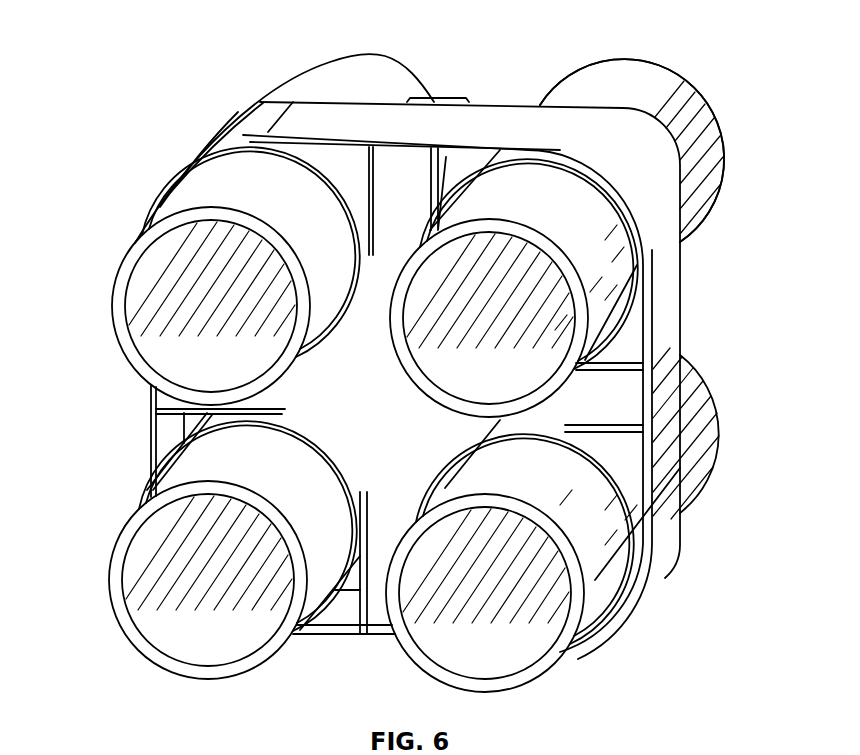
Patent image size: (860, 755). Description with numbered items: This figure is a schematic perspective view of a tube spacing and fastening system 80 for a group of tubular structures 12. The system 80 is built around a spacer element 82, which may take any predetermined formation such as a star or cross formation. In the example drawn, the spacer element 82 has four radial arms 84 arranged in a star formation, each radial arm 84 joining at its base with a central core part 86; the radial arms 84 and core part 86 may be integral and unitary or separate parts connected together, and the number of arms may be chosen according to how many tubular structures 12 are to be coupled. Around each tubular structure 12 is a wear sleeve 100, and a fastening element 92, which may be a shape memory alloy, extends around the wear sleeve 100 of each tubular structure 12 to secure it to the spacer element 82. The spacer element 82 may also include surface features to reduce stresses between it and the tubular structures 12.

The tube spacing and fastening system 80 is at (93, 60).
The tubular structures 12 is at (650, 82).
The spacer element 82 is at (657, 375).
The radial arms 84 is at (410, 168).
The core part 86 is at (388, 401).
The fastening element 92 is at (650, 176).
The wear sleeve 100 is at (347, 167).